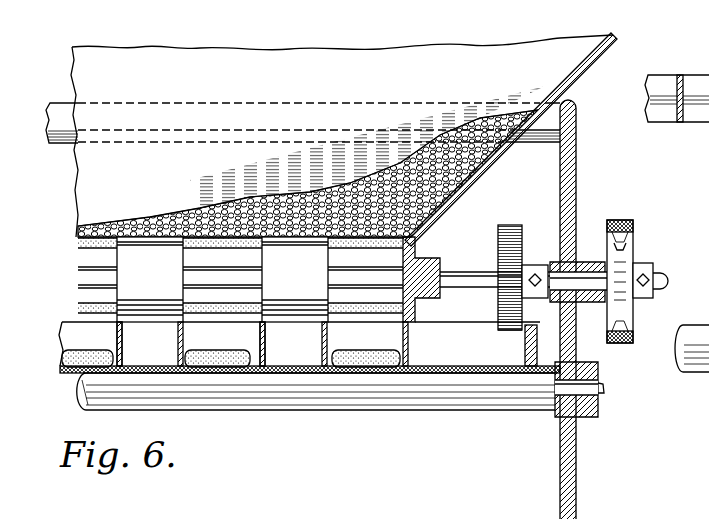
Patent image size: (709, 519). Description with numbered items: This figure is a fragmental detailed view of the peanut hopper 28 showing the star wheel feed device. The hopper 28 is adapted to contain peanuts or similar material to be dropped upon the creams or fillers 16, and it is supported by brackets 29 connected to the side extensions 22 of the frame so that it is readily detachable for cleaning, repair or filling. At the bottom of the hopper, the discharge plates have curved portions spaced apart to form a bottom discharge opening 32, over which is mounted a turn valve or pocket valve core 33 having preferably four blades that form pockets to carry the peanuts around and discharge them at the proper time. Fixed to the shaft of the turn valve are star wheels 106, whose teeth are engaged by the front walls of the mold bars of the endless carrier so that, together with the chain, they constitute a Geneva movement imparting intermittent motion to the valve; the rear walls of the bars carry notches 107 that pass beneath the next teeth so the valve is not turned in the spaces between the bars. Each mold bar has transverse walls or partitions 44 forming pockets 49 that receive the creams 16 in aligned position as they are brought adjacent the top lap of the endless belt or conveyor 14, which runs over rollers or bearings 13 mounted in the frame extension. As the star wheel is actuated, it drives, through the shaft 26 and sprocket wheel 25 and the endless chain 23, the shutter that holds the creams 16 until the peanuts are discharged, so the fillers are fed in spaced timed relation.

The rollers or other bearings 13 is at (342, 394).
The endless belt or conveyor 14 is at (455, 374).
The creams or other fillers 16 is at (62, 353).
The side extensions of the frame 22 is at (578, 176).
The endless belt or chain 23 is at (628, 221).
The sprocket wheel 25 is at (630, 239).
The shaft 26 is at (666, 283).
The hopper 28 is at (344, 139).
The brackets 29 is at (58, 107).
The bottom discharge opening 32 is at (222, 279).
The turn valve or pocket valve core 33 is at (80, 295).
The transverse walls or partitions 44 is at (123, 341).
The pockets 49 is at (299, 344).
The star wheels 106 is at (509, 232).
The notches 107 is at (520, 334).